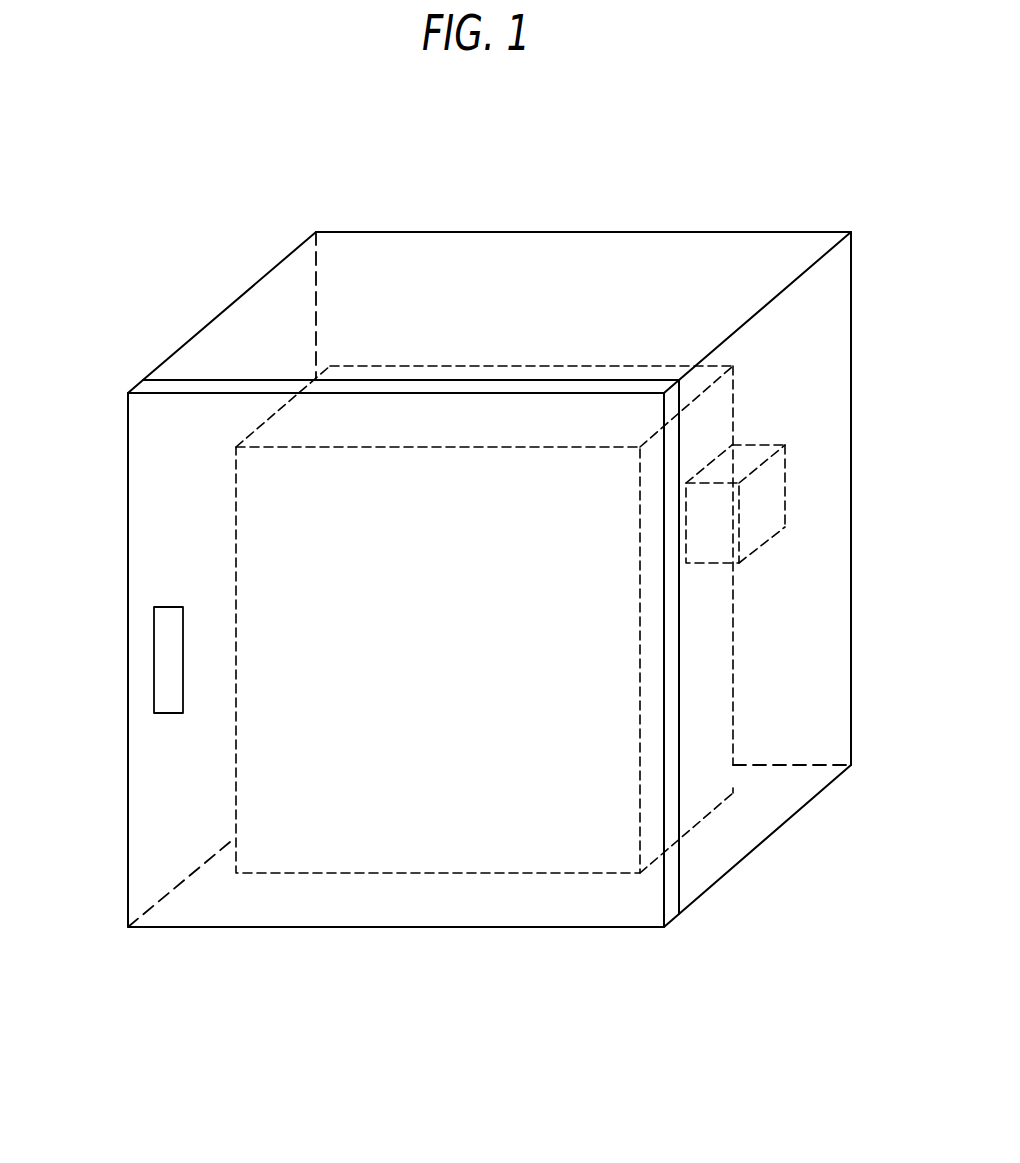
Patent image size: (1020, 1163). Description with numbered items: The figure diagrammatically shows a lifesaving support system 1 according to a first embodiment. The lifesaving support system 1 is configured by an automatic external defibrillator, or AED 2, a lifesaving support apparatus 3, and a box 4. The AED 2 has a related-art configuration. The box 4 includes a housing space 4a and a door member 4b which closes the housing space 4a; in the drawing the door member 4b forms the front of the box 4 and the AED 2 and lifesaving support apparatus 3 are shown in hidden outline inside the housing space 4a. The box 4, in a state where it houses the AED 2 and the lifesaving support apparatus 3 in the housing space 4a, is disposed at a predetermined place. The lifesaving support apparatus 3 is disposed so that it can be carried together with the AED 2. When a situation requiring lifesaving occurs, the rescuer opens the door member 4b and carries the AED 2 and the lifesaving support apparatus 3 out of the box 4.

The lifesaving support system 1 is at (727, 186).
The automatic external defibrillator (AED) 2 is at (525, 820).
The lifesaving support apparatus 3 is at (760, 500).
The box 4 is at (399, 232).
The housing space 4a is at (258, 340).
The door member 4b is at (173, 542).